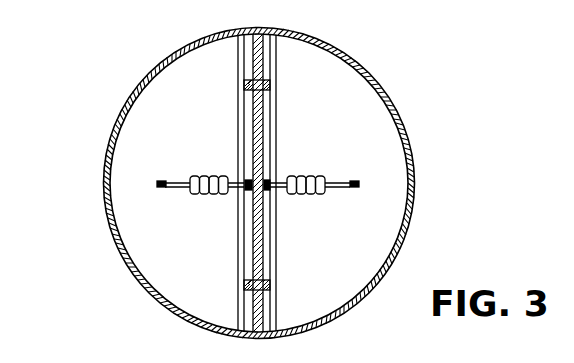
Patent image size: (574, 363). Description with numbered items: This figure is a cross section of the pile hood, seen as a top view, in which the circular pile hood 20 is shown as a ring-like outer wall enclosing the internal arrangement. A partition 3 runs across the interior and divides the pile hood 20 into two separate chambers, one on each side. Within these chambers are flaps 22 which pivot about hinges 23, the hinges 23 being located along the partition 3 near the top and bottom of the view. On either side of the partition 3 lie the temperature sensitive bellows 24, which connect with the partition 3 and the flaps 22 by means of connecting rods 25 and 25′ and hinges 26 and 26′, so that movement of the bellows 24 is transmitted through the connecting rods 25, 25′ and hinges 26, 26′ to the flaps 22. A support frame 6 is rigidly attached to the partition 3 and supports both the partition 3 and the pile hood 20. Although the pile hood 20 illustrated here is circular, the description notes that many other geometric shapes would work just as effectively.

The pile hood 20 is at (412, 170).
The flaps 22 is at (378, 212).
The partition 3 is at (273, 140).
The support frame 6 is at (273, 110).
The hinges 23 is at (277, 61).
The temperature sensitive bellows 24 is at (190, 176).
The connecting rod 25 is at (226, 176).
The connecting rod 25′ is at (158, 181).
The hinge 26 is at (240, 176).
The hinge 26′ is at (160, 186).